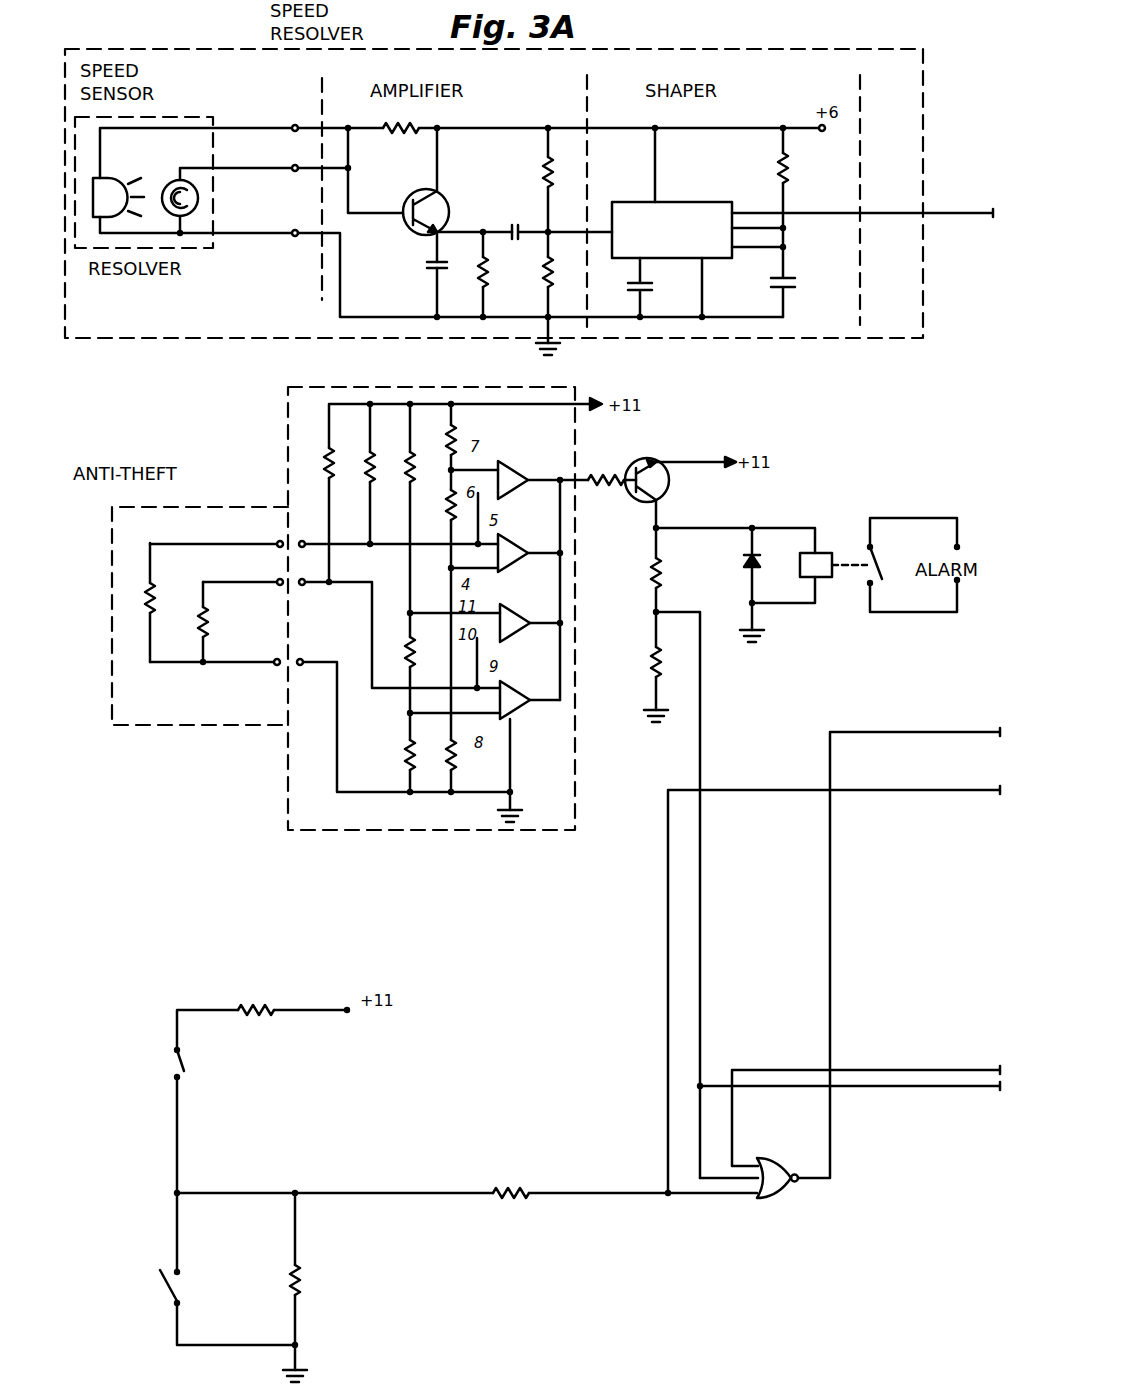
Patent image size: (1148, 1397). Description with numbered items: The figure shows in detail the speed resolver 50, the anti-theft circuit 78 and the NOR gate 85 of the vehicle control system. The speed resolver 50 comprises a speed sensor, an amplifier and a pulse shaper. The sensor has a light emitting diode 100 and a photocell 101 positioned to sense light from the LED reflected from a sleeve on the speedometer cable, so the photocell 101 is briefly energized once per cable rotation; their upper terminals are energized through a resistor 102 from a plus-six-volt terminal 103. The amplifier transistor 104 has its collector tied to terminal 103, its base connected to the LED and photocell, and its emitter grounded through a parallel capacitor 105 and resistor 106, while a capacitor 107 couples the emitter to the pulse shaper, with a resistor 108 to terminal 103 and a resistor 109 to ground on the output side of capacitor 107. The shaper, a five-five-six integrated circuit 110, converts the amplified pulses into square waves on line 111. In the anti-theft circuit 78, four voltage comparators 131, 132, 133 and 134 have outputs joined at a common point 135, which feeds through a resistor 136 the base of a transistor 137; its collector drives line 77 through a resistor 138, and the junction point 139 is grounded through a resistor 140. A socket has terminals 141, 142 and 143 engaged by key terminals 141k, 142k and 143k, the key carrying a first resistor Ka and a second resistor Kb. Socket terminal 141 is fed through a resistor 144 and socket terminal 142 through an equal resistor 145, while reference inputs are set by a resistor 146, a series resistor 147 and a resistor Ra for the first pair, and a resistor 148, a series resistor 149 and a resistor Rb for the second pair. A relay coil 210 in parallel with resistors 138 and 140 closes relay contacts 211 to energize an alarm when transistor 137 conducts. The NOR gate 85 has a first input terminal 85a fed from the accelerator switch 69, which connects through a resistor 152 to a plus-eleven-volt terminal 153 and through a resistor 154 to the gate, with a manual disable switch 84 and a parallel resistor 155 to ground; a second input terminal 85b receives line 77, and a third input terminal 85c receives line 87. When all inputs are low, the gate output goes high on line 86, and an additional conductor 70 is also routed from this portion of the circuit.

The speed resolver 50 is at (199, 48).
The light emitting diode 100 is at (108, 178).
The photocell 101 is at (198, 198).
The resistor 102 is at (397, 133).
The +6 volt terminal 103 is at (822, 132).
The transistor 104 is at (443, 198).
The capacitor 105 is at (427, 266).
The resistor 106 is at (486, 280).
The capacitor 107 is at (514, 224).
The resistor 108 is at (545, 166).
The resistor 109 is at (545, 280).
The 556 integrated circuit 110 is at (692, 202).
The line 111 is at (952, 212).
The voltage comparator 131 is at (520, 472).
The voltage comparator 132 is at (520, 546).
The voltage comparator 133 is at (519, 624).
The voltage comparator 134 is at (523, 717).
The common point 135 is at (584, 480).
The resistor 136 is at (602, 486).
The transistor 137 is at (656, 460).
The resistor 138 is at (663, 573).
The junction point 139 is at (652, 613).
The resistor 140 is at (646, 666).
The socket terminal 141 is at (302, 543).
The key terminal 141k is at (278, 543).
The socket terminal 142 is at (302, 585).
The key terminal 142k is at (278, 581).
The socket terminal 143 is at (302, 660).
The key terminal 143k is at (277, 666).
The resistor 144 is at (368, 455).
The resistor 145 is at (324, 465).
The resistor 146 is at (457, 443).
The resistor 147 is at (449, 512).
The resistor 148 is at (409, 455).
The resistor 149 is at (408, 676).
The resistor Ra is at (454, 760).
The resistor Rb is at (408, 754).
The first key resistor Ka is at (148, 599).
The second key resistor Kb is at (207, 622).
The anti-theft circuit 78 is at (238, 506).
The relay coil 210 is at (826, 580).
The relay contacts 211 is at (882, 568).
The line 86 is at (929, 732).
The line 70 is at (912, 792).
The line 77 is at (703, 877).
The line 87 is at (941, 1070).
The NOR gate 85 is at (786, 1195).
The first input terminal 85a is at (760, 1200).
The second input terminal 85b is at (756, 1194).
The third input terminal 85c is at (760, 1166).
The resistor 152 is at (255, 1015).
The +11 volt power supply terminal 153 is at (349, 1013).
The accelerator switch 69 is at (190, 1064).
The resistor 154 is at (515, 1200).
The manual switch 84 is at (161, 1296).
The resistor 155 is at (300, 1285).